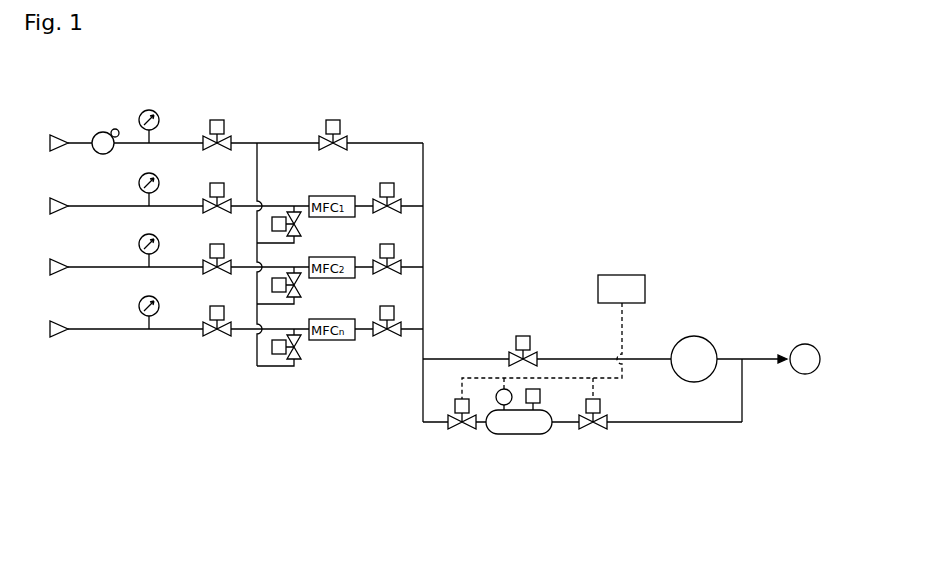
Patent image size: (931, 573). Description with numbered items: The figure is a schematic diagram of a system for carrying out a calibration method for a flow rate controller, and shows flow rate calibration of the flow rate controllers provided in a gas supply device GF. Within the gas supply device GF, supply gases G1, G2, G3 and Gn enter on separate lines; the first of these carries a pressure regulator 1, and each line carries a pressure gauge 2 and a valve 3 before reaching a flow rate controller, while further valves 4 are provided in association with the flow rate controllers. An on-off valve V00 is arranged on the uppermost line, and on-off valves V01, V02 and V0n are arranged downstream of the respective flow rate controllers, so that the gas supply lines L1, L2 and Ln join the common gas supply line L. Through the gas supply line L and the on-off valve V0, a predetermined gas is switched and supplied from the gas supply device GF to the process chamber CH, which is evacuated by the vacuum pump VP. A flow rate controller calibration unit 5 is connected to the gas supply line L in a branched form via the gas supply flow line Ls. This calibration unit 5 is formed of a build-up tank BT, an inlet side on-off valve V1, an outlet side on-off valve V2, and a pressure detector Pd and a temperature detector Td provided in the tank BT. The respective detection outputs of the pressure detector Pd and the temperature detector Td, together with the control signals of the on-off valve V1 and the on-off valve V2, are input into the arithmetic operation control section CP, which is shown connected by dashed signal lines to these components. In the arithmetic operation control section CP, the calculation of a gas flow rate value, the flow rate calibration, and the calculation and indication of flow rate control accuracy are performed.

The pressure regulator 1 is at (103, 132).
The pressure gauge 2 is at (157, 113).
The valve 3 is at (222, 120).
The valve 4 is at (279, 217).
The flow rate controller calibration unit 5 is at (478, 500).
The supply gas G1 is at (40, 143).
The supply gas G2 is at (40, 206).
The supply gas G3 is at (40, 267).
The supply gas Gn is at (40, 329).
The on-off valve V00 is at (333, 120).
The on-off valve V01 is at (387, 183).
The on-off valve V02 is at (387, 244).
The on-off valve V0n is at (387, 306).
The gas supply line L1 is at (423, 176).
The gas supply line L2 is at (423, 235).
The gas supply line Ln is at (423, 293).
The gas supply line L is at (477, 357).
The gas supply flow line Ls is at (423, 388).
The on-off valve V0 is at (523, 336).
The arithmetic operation control section CP is at (621, 275).
The process chamber CH is at (693, 336).
The vacuum pump VP is at (800, 374).
The inlet side on-off valve V1 is at (457, 436).
The temperature detector Td is at (497, 401).
The build-up tank BT is at (519, 434).
The pressure detector Pd is at (540, 396).
The outlet side on-off valve V2 is at (591, 436).
The gas supply device GF is at (162, 350).